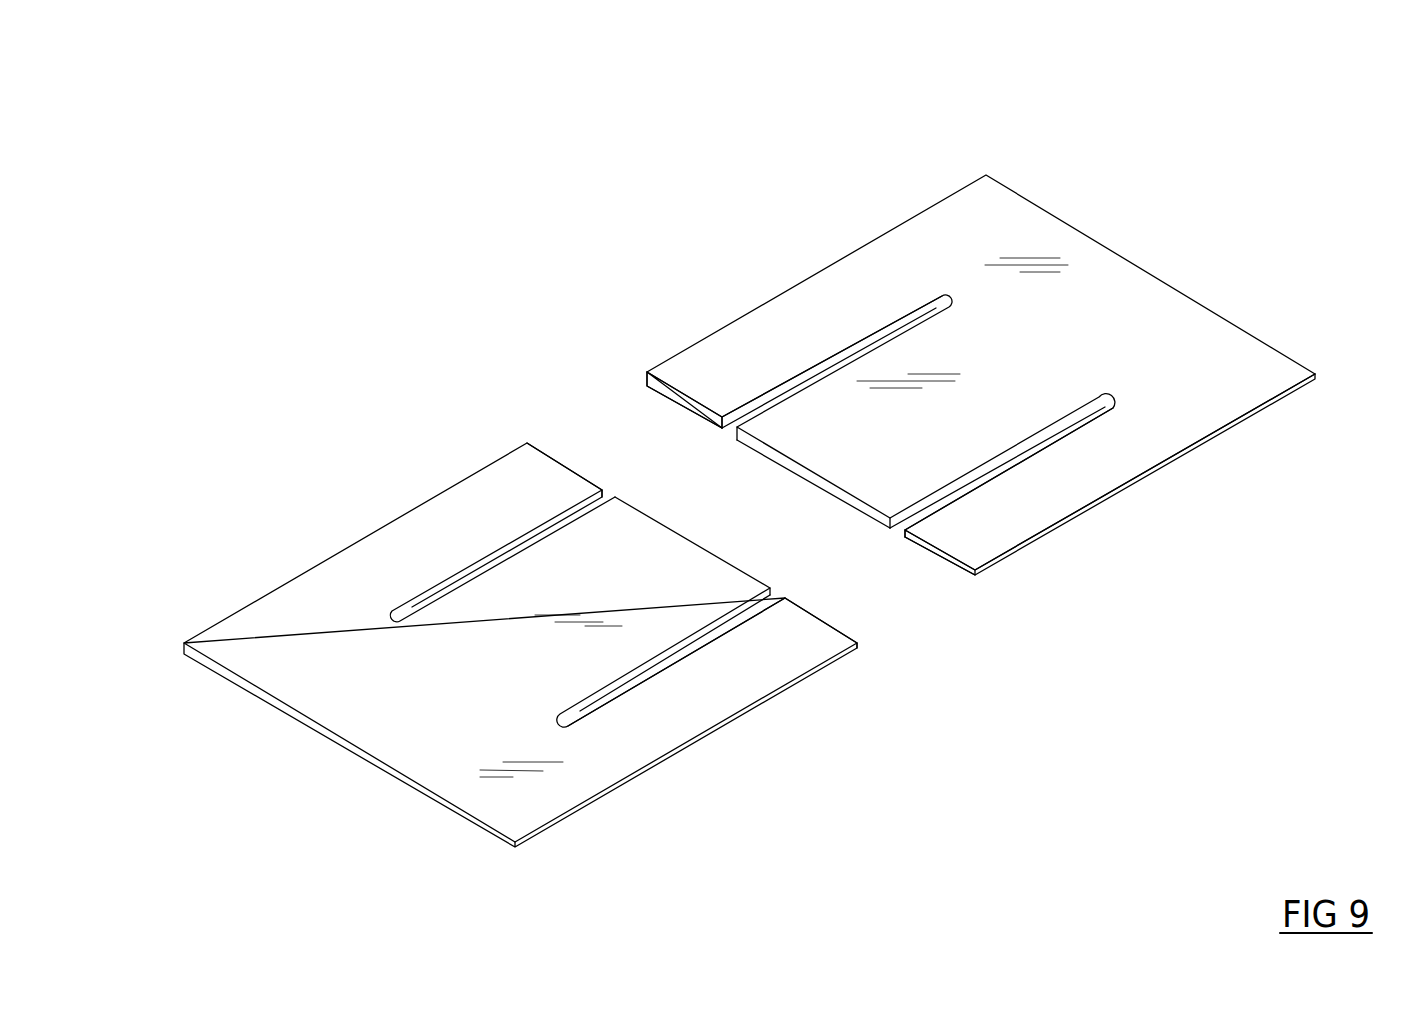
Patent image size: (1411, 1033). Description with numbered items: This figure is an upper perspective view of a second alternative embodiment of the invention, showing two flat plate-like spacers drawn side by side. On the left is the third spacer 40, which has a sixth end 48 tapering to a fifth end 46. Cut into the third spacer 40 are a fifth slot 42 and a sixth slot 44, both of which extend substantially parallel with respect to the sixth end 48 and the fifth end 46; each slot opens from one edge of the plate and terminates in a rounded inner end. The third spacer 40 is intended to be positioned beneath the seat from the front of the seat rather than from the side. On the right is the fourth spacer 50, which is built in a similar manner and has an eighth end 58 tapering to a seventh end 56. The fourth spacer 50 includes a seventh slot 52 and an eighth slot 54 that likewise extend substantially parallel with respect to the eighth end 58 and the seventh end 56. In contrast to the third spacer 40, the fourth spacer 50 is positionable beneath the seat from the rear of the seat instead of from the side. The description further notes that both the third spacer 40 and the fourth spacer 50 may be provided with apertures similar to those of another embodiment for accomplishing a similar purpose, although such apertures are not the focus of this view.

The third spacer 40 is at (735, 719).
The fifth slot 42 is at (733, 630).
The sixth slot 44 is at (420, 594).
The fifth end 46 is at (587, 802).
The sixth end 48 is at (450, 488).
The fourth spacer 50 is at (947, 185).
The seventh slot 52 is at (992, 478).
The eighth slot 54 is at (791, 377).
The seventh end 56 is at (1202, 440).
The eighth end 58 is at (843, 258).